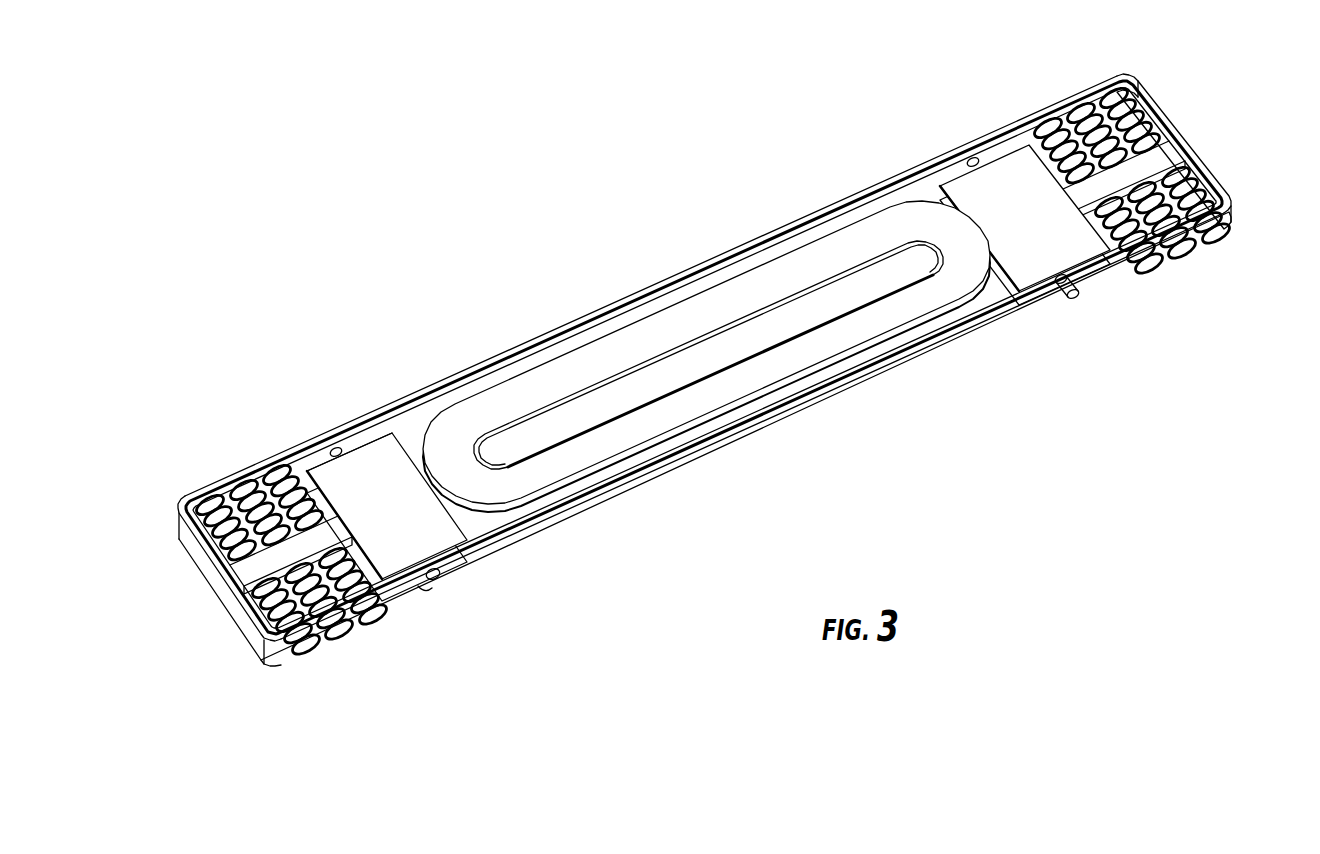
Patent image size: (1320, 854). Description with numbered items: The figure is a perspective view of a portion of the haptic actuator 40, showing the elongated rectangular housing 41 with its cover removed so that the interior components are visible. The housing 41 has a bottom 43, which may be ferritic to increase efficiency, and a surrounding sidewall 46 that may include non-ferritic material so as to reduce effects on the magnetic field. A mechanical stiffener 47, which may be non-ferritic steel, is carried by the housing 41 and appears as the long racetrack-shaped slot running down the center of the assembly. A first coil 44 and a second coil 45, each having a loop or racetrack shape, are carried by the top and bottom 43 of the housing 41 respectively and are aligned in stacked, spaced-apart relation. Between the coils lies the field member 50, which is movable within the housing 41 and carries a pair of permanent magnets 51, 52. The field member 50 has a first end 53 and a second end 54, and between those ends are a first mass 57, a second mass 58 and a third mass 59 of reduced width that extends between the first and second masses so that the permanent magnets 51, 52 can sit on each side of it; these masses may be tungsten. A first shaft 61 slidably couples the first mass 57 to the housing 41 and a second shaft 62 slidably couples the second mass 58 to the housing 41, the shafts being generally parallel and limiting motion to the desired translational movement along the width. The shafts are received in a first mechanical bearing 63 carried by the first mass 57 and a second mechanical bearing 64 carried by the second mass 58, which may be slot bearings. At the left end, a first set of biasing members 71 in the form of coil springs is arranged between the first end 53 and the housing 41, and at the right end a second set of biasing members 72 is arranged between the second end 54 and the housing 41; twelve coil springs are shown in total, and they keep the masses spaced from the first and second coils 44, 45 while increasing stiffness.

The haptic actuator 40 is at (581, 146).
The housing 41 is at (258, 682).
The bottom 43 is at (1132, 128).
The first coil 44 is at (630, 346).
The second coil 45 is at (938, 347).
The sidewall 46 is at (178, 512).
The mechanical stiffener 47 is at (525, 438).
The field member 50 is at (485, 527).
The permanent magnet 51 is at (923, 193).
The permanent magnet 52 is at (480, 515).
The first end 53 is at (240, 582).
The second end 54 is at (1178, 152).
The first mass 57 is at (362, 488).
The second mass 58 is at (968, 186).
The third mass 59 is at (392, 437).
The first shaft 61 is at (437, 580).
The second shaft 62 is at (1067, 298).
The first mechanical bearing 63 is at (423, 586).
The second mechanical bearing 64 is at (1083, 288).
The first set of biasing members 71 is at (238, 478).
The second set of biasing members 72 is at (1172, 237).